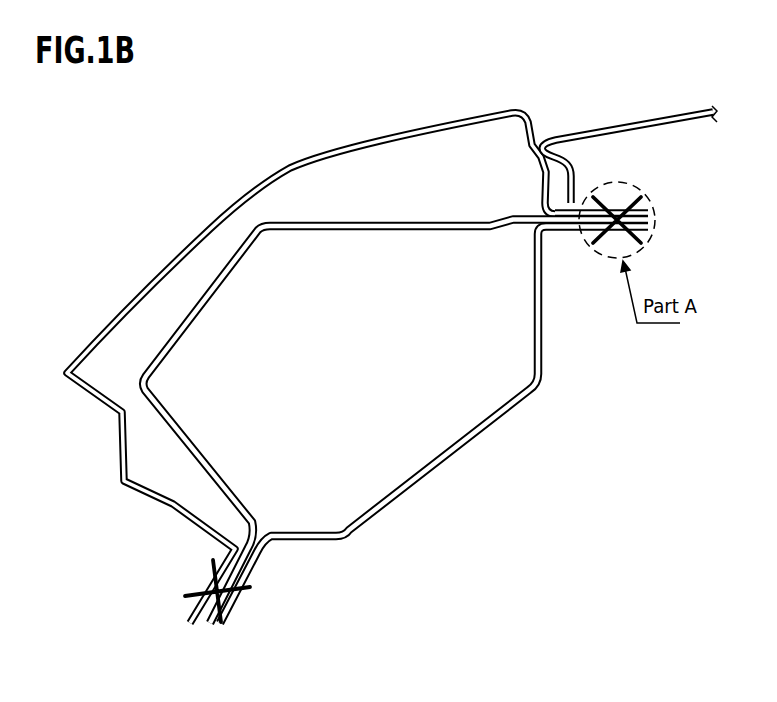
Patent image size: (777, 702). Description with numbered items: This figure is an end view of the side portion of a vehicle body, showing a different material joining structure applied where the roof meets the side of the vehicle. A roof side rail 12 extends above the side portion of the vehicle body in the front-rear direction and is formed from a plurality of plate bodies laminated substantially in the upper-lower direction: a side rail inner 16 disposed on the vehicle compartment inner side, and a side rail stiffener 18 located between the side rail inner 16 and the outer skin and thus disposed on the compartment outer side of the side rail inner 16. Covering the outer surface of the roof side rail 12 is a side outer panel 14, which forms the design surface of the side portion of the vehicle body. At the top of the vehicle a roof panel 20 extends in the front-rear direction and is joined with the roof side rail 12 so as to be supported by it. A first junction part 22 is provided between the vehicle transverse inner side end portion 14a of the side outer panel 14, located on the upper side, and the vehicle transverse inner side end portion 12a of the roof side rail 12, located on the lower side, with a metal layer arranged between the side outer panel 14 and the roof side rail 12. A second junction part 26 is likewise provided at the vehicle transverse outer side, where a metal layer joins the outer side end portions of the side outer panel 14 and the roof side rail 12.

The roof side rail 12 is at (436, 422).
The vehicle transverse inner side end portion of the roof side rail 12a is at (652, 232).
The side outer panel 14 is at (297, 167).
The vehicle transverse inner side end portion of the side outer panel 14a is at (650, 211).
The side rail inner 16 is at (432, 470).
The side rail stiffener 18 is at (398, 231).
The roof panel 20 is at (642, 120).
The first junction part 22 is at (642, 184).
The second junction part 26 is at (206, 581).